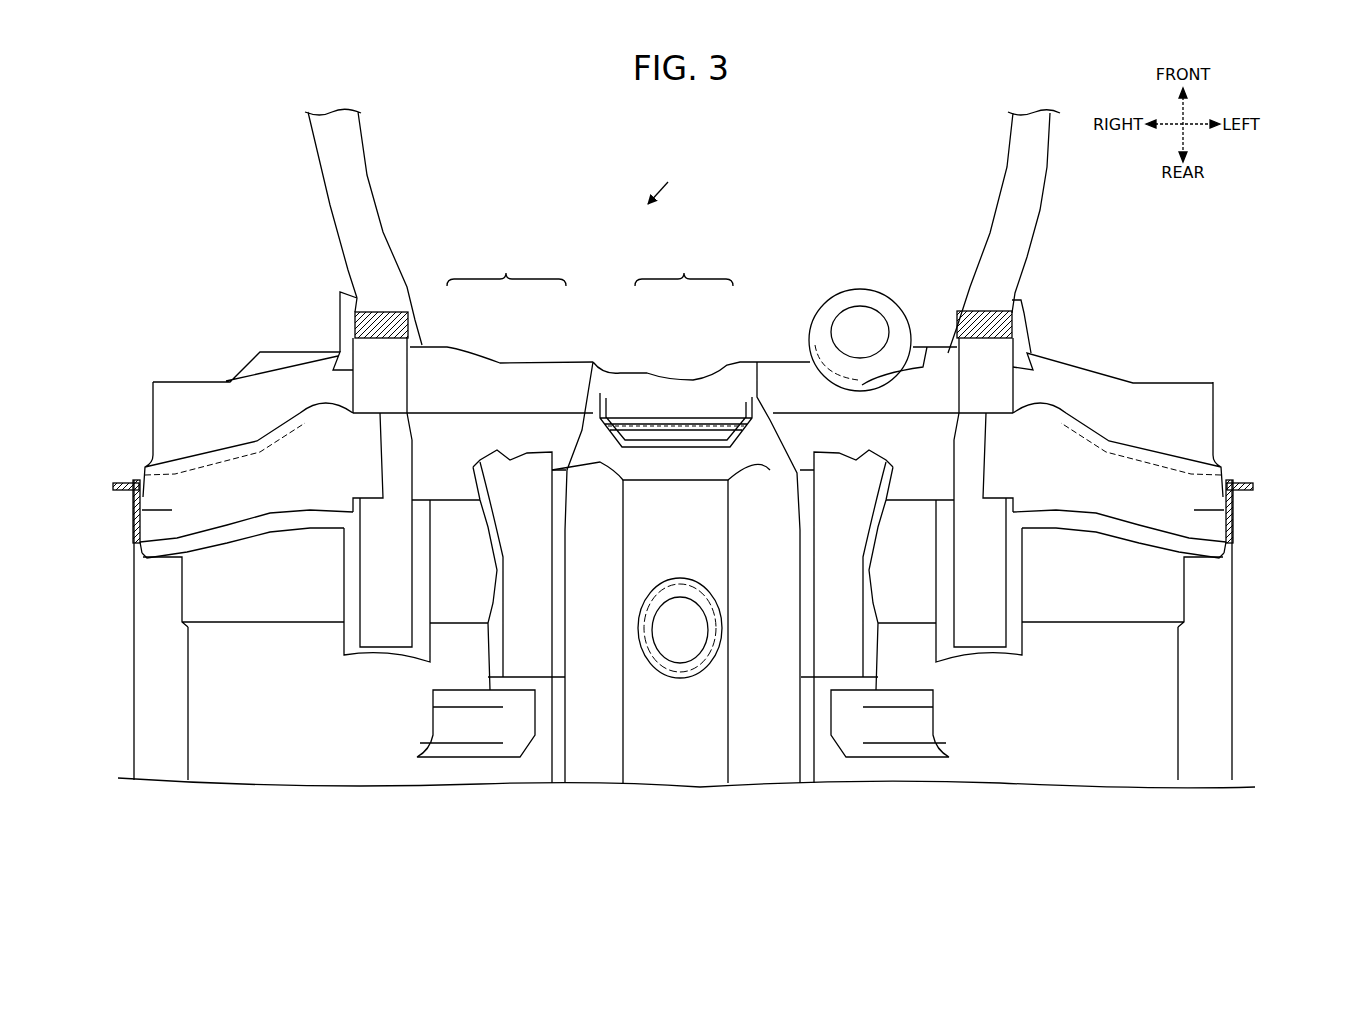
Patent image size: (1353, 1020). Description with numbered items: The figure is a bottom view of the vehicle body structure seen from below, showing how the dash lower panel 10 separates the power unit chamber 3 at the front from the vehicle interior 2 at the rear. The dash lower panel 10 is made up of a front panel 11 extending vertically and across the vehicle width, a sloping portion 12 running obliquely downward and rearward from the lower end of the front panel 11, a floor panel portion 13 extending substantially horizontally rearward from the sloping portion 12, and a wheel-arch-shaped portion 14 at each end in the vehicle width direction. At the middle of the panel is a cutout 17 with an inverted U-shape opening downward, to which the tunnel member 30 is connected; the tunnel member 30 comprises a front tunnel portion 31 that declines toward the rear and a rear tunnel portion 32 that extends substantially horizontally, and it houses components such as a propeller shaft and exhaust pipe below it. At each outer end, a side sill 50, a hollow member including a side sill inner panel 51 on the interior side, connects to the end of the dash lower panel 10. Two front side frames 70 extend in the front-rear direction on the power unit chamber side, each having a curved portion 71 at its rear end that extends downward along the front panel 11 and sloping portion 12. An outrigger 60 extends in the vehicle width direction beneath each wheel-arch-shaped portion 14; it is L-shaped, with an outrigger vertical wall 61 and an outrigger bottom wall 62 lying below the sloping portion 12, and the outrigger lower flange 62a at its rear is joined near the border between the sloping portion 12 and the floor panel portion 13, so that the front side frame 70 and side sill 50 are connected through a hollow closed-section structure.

The vehicle interior 2 is at (1107, 770).
The power unit chamber 3 is at (669, 179).
The dash lower panel 10 is at (506, 266).
The front panel 11 is at (538, 358).
The sloping portion 12 is at (497, 387).
The floor panel portion 13 is at (460, 540).
The wheel-arch-shaped portion 14 is at (220, 392).
The cutout 17 is at (625, 405).
The tunnel member 30 is at (684, 266).
The front tunnel portion 31 is at (662, 397).
The rear tunnel portion 32 is at (700, 505).
The side sill 50 is at (150, 758).
The side sill inner panel 51 is at (701, 703).
The outrigger 60 is at (135, 527).
The outrigger vertical wall 61 is at (203, 497).
The outrigger bottom wall 62 is at (197, 497).
The outrigger lower flange 62a is at (210, 543).
The front side frame 70 is at (337, 197).
The curved portion 71 is at (380, 547).